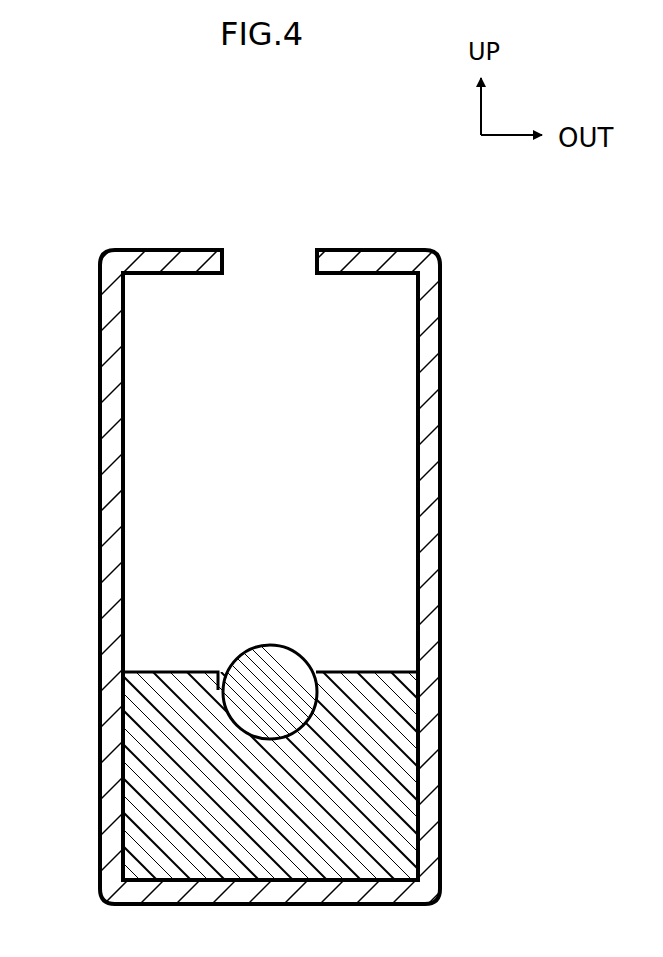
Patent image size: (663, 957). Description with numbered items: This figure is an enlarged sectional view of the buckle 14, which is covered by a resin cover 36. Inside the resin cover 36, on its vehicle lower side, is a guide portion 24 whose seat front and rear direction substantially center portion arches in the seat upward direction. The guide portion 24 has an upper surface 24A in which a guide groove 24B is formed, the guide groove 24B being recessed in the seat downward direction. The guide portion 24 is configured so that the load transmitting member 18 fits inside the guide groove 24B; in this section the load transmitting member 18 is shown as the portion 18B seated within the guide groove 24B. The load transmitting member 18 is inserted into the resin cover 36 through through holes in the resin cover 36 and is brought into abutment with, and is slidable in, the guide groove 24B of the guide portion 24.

The buckle 14 is at (110, 197).
The resin cover 36 is at (440, 422).
The guide portion 24 is at (173, 677).
The upper surface 24A is at (348, 675).
The guide groove 24B is at (223, 677).
The bead of harness 18B is at (258, 655).
The load transmitting member 18 is at (265, 692).